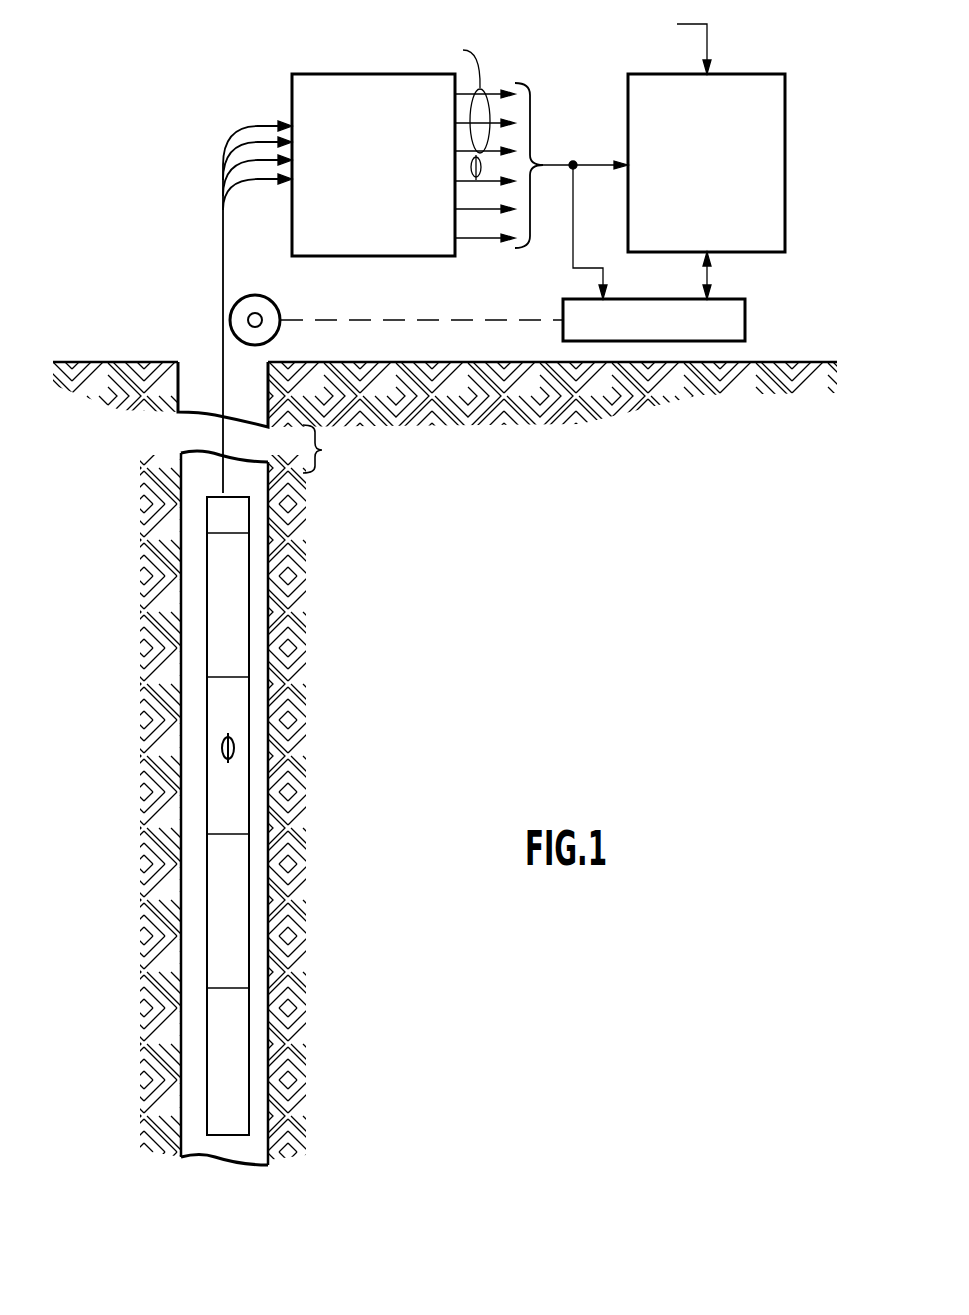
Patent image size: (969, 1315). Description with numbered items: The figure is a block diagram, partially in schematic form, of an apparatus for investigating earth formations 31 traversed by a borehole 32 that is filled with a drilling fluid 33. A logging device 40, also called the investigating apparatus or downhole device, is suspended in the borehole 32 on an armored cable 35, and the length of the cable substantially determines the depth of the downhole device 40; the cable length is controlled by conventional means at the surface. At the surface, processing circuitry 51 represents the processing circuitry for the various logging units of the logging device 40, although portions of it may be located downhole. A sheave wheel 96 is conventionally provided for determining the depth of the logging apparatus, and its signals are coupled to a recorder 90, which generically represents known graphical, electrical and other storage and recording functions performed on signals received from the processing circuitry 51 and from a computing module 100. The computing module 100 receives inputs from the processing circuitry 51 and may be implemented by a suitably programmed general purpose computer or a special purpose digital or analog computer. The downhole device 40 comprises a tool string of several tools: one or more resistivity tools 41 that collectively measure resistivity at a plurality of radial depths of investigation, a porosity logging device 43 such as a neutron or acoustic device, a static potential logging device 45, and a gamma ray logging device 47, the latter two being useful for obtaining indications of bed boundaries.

The earth formations 31 is at (102, 367).
The borehole 32 is at (207, 378).
The drilling fluid 33 is at (191, 593).
The armored cable 35 is at (227, 357).
The logging device 40 is at (211, 476).
The resistivity tools 41 is at (243, 631).
The porosity logging device 43 is at (245, 744).
The static potential (SP) logging device 45 is at (247, 890).
The gamma ray (GR) logging device 47 is at (247, 1023).
The processing circuitry 51 is at (317, 80).
The recorder 90 is at (733, 308).
The sheave wheel 96 is at (260, 315).
The computing module 100 is at (775, 100).